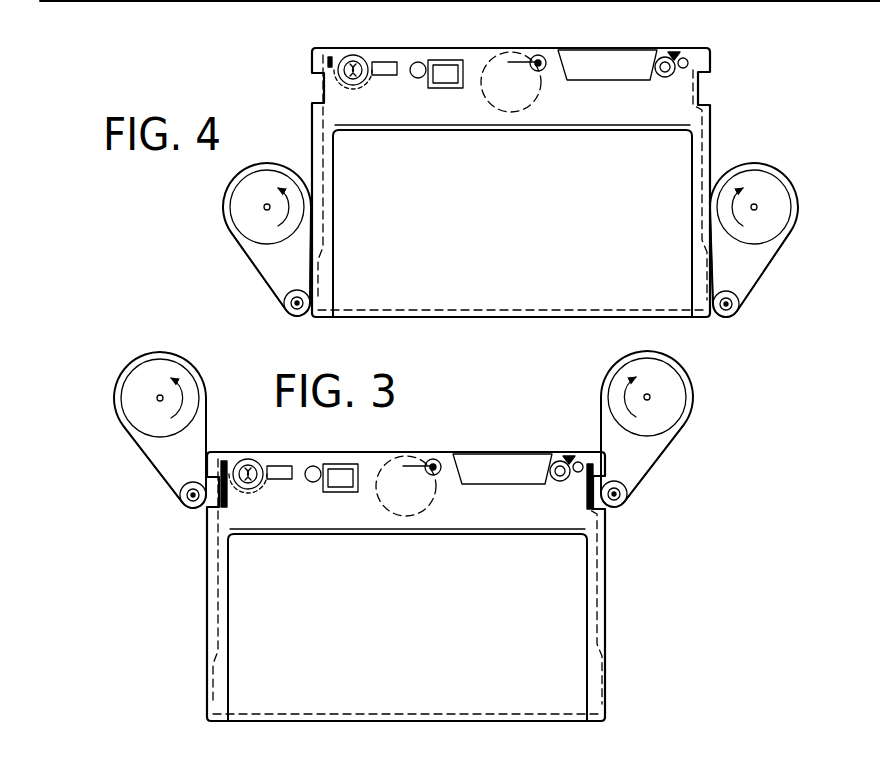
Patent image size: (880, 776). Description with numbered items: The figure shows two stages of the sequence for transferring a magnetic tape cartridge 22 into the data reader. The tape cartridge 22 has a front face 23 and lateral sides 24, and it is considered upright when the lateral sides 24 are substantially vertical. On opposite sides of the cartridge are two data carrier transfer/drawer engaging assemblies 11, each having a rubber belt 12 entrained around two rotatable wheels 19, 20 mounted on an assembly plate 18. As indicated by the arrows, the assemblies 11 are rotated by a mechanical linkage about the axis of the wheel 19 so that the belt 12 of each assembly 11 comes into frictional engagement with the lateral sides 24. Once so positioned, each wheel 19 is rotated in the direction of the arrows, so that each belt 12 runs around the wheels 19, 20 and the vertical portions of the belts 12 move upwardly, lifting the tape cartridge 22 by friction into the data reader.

In FIG. 4, the data carrier transfer/drawer engaging assembly 11 is at (228, 248).
In FIG. 3, the data carrier transfer/drawer engaging assembly 11 is at (104, 401).
In FIG. 4, the rubber belt 12 is at (272, 296).
In FIG. 3, the rubber belt 12 is at (147, 455).
In FIG. 4, the assembly plate 18 is at (272, 256).
In FIG. 3, the assembly plate 18 is at (178, 450).
In FIG. 4, the wheel 19 is at (272, 168).
In FIG. 3, the wheel 19 is at (145, 370).
In FIG. 4, the wheel 20 is at (292, 318).
In FIG. 3, the wheel 20 is at (187, 504).
In FIG. 4, the magnetic tape cartridge 22 is at (306, 71).
In FIG. 3, the magnetic tape cartridge 22 is at (388, 437).
In FIG. 4, the front face 23 is at (460, 297).
In FIG. 3, the front face 23 is at (442, 690).
In FIG. 4, the lateral sides 24 is at (311, 112).
In FIG. 3, the lateral sides 24 is at (206, 620).